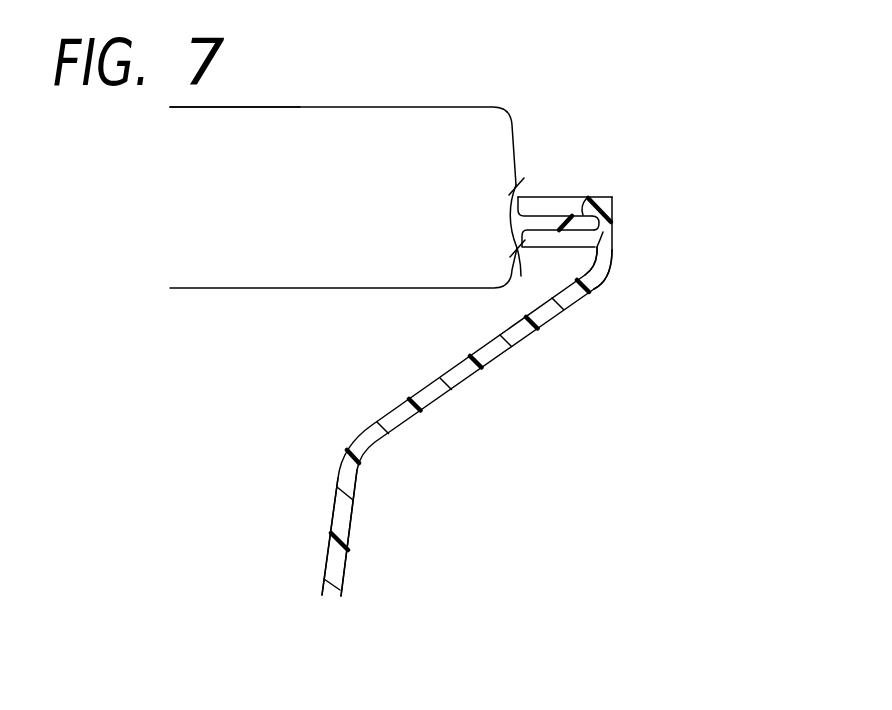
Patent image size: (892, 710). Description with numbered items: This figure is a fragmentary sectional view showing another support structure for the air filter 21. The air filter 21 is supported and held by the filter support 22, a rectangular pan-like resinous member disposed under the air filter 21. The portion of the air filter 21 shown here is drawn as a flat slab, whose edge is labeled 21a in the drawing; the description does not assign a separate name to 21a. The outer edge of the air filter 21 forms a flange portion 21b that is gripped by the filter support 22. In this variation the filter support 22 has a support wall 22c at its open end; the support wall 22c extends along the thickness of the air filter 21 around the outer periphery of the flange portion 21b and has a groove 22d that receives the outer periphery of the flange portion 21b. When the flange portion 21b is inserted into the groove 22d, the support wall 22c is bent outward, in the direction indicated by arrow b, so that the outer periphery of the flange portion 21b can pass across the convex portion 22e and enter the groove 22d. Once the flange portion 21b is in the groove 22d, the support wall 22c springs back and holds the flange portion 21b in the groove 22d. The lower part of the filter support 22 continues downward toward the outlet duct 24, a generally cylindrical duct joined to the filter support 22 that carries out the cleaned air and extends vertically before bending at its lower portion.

The air filter 21 is at (403, 102).
The board surface 21a is at (343, 137).
The flange portion 21b is at (557, 222).
The filter support 22 is at (472, 373).
The support wall 22c is at (604, 240).
The groove 22d is at (610, 213).
The convex portion 22e is at (580, 194).
The outlet duct 24 is at (338, 577).
The arrow b is at (618, 225).